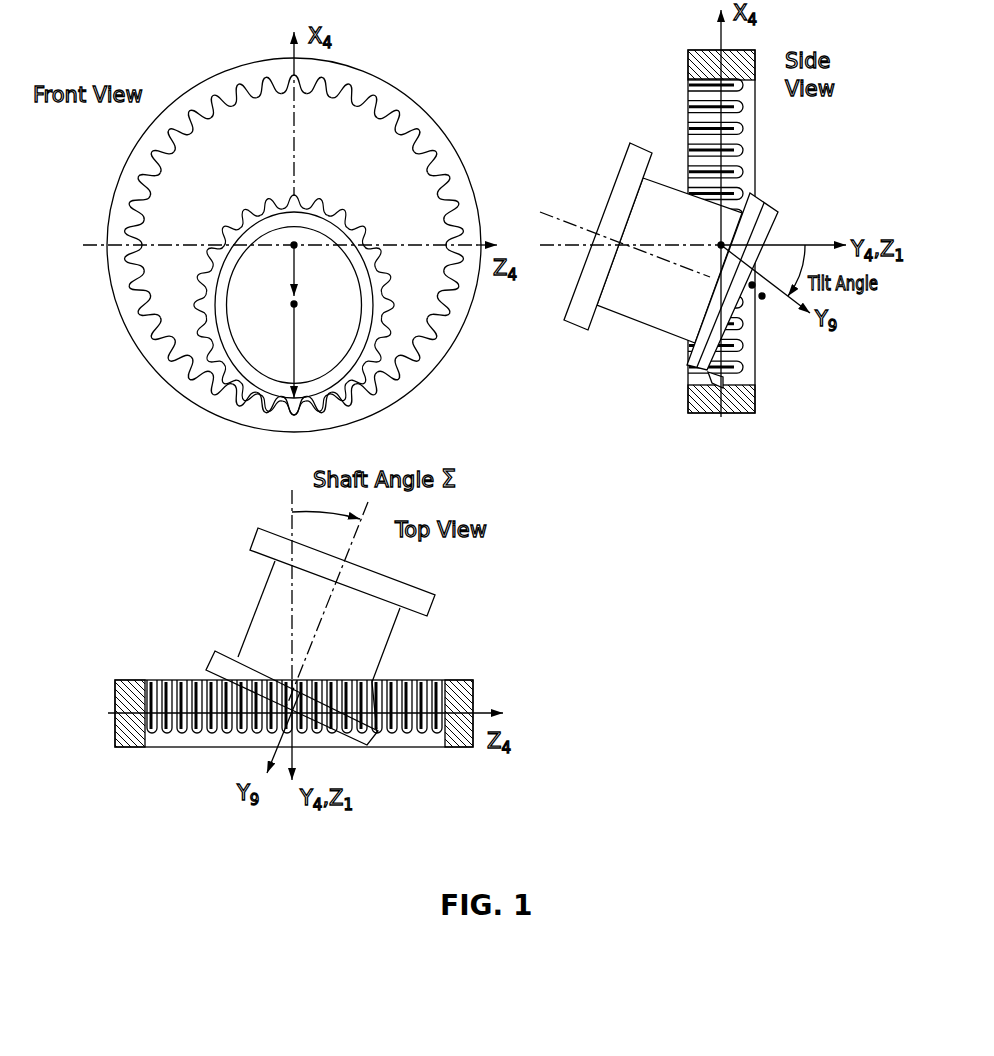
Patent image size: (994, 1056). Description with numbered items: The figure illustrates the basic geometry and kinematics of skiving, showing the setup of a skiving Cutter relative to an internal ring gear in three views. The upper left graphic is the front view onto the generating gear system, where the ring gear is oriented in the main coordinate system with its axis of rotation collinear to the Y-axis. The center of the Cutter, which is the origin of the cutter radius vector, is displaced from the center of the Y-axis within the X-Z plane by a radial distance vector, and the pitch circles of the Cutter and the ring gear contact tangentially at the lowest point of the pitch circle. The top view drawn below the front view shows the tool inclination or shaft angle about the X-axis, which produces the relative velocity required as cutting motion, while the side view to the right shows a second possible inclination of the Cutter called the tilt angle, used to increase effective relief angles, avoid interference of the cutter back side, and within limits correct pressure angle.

The skiving cutter Cutter is at (225, 333).